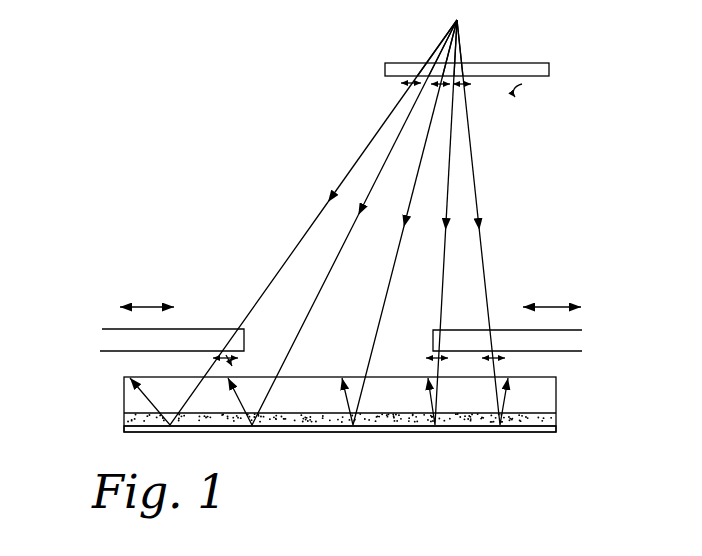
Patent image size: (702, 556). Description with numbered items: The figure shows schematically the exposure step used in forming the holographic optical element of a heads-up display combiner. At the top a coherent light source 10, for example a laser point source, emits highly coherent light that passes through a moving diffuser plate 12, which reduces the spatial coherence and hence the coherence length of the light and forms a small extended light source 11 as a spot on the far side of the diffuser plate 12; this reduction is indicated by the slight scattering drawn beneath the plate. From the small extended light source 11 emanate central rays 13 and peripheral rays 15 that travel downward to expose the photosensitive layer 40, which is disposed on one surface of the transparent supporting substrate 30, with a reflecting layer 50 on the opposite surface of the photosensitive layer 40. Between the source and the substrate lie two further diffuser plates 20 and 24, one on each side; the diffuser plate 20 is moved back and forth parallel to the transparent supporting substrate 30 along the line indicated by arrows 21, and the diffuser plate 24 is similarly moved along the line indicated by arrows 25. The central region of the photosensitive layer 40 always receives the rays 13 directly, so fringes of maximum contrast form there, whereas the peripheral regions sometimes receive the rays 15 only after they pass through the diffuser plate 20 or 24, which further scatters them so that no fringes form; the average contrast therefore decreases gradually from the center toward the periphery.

The coherent light source 10 is at (470, 19).
The small extended light source 11 is at (422, 88).
The diffuser plate 12 is at (385, 64).
The central rays 13 is at (366, 309).
The peripheral rays 15 is at (352, 168).
The diffuser plate 20 is at (575, 340).
The arrows 21 is at (552, 290).
The diffuser plate 24 is at (100, 340).
The arrows 25 is at (147, 290).
The transparent supporting substrate 30 is at (558, 393).
The photosensitive layer 40 is at (557, 418).
The reflecting layer 50 is at (557, 432).